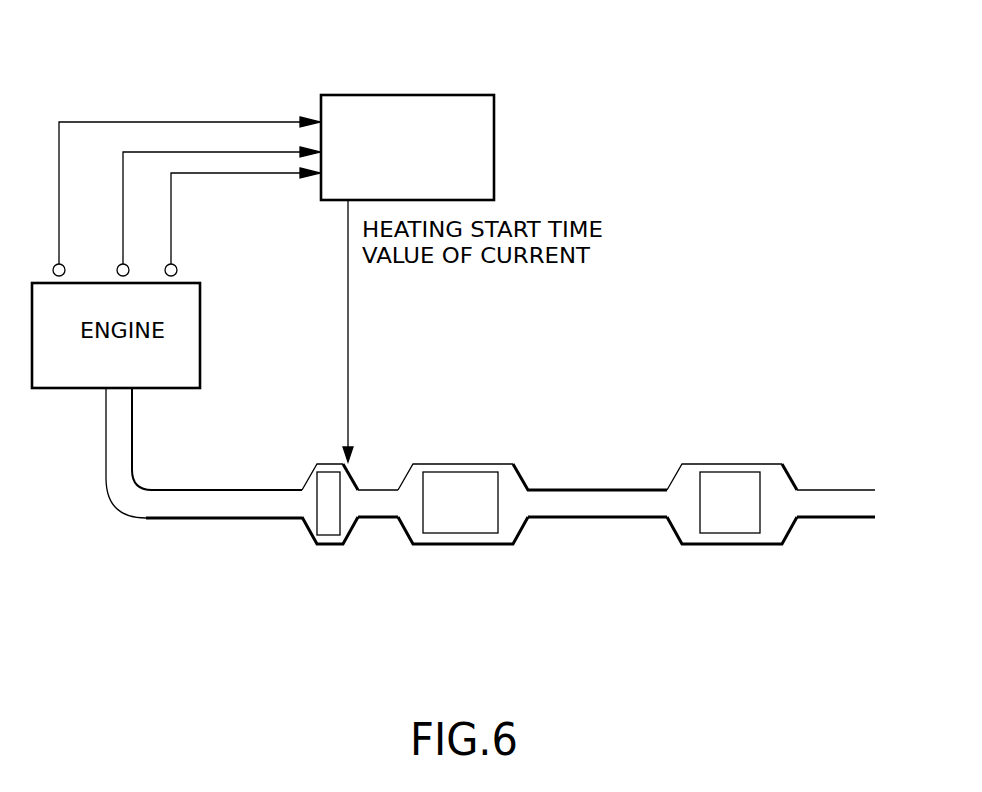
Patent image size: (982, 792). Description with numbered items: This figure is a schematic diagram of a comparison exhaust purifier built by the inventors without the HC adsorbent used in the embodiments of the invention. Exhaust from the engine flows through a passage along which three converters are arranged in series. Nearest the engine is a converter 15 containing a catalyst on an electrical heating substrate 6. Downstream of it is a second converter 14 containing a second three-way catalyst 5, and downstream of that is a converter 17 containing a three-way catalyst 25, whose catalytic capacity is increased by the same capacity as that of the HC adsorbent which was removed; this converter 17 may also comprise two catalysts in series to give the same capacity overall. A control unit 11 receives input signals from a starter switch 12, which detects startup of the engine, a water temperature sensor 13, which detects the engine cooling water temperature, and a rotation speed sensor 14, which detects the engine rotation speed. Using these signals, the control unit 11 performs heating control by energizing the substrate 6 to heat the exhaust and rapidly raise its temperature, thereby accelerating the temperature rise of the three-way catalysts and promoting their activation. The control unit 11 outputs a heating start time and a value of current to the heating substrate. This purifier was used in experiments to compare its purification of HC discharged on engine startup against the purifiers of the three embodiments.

The second three-way catalyst 5 is at (460, 533).
The electrical heating substrate 6 is at (328, 535).
The control unit 11 is at (495, 130).
The starter switch 12 is at (177, 268).
The water temperature sensor 13 is at (125, 264).
The rotation speed sensor 14 is at (57, 263).
The converter 15 is at (330, 463).
The converter 17 is at (730, 463).
The three-way catalyst 25 is at (735, 533).